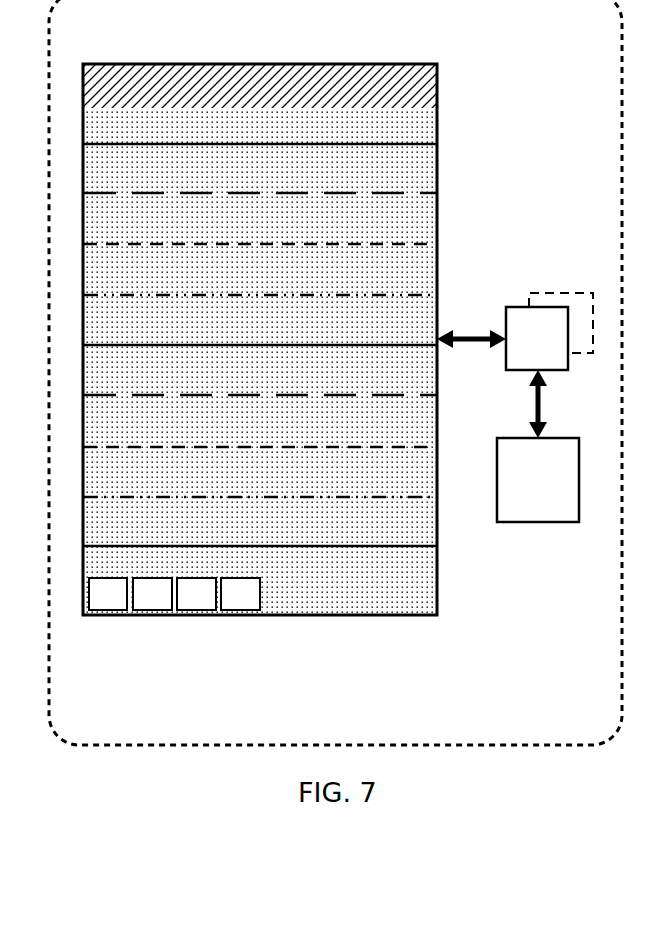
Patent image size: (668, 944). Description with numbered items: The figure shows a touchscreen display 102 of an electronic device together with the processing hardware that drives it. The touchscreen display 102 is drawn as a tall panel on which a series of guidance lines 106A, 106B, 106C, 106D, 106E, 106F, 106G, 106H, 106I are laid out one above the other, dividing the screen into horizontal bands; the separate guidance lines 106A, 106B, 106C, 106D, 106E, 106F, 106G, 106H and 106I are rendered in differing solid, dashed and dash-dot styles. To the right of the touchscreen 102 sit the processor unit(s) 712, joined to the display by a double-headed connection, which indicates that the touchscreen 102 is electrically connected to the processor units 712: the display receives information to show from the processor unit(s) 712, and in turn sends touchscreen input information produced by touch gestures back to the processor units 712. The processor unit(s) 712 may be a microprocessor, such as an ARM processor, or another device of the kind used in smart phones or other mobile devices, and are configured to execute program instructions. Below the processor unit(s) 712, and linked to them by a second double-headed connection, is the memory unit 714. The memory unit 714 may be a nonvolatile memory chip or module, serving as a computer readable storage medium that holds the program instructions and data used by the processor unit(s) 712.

The touchscreen display 102 is at (84, 63).
The guidance line 106A is at (352, 145).
The guidance line 106B is at (352, 194).
The guidance line 106C is at (352, 245).
The guidance line 106D is at (352, 296).
The guidance line 106E is at (352, 346).
The guidance line 106F is at (352, 396).
The guidance line 106G is at (352, 448).
The guidance line 106H is at (352, 498).
The guidance line 106I is at (352, 547).
The processor unit(s) 712 is at (545, 293).
The memory unit 714 is at (538, 480).